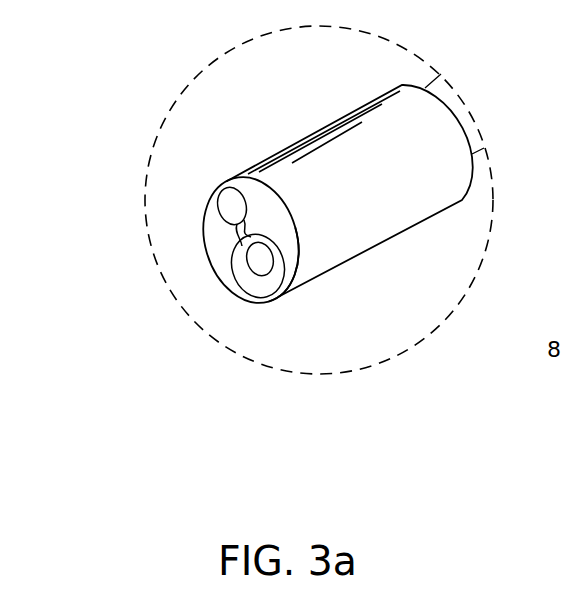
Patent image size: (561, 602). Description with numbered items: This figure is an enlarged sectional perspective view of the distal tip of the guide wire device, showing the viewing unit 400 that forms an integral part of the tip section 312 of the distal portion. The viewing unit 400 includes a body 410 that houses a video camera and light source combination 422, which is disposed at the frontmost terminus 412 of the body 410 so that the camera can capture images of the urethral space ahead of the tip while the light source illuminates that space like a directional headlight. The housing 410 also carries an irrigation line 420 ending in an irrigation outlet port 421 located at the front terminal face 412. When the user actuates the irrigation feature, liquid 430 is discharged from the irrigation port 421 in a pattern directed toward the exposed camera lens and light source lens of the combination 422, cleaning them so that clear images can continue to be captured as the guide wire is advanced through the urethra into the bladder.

The tip section 312 is at (226, 85).
The viewing unit 400 is at (363, 250).
The body 410 is at (425, 178).
The frontmost terminus 412 is at (220, 235).
The irrigation line 420 is at (252, 292).
The irrigation outlet port 421 is at (283, 298).
The video camera and light source combination 422 is at (224, 207).
The liquid discharge 430 is at (258, 255).